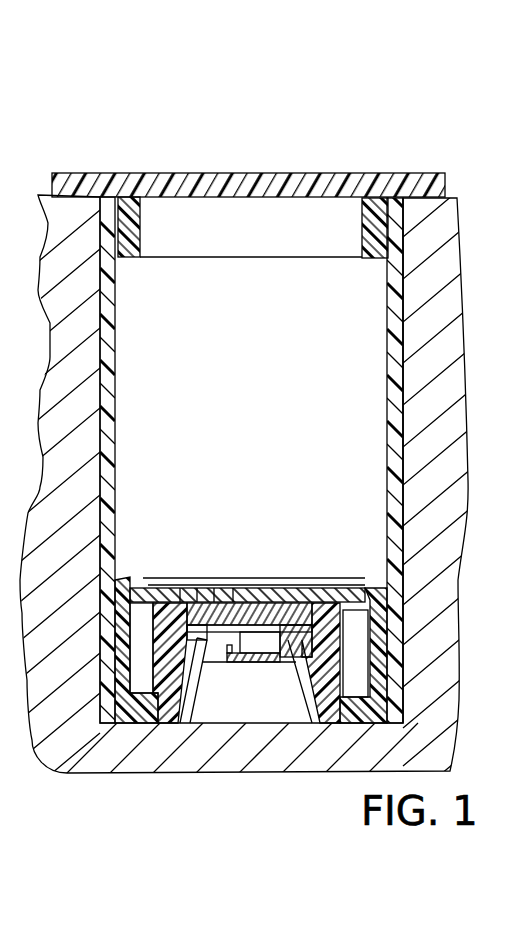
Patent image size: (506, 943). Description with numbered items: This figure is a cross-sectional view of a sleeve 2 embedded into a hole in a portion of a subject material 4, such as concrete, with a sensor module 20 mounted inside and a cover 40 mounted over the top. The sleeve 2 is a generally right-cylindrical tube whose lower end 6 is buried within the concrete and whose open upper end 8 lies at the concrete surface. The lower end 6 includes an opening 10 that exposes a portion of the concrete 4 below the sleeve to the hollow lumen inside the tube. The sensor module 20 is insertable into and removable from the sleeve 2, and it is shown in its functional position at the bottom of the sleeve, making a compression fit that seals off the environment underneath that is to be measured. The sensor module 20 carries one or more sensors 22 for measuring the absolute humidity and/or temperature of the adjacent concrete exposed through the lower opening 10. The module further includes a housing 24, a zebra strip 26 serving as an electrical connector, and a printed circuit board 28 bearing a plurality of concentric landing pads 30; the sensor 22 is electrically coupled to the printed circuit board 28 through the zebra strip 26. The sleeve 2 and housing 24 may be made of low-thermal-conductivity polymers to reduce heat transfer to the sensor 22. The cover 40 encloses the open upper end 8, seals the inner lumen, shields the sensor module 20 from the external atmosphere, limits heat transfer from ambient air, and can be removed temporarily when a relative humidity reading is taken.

The sleeve 2 is at (406, 334).
The subject material 4 is at (452, 386).
The lower end 6 is at (133, 713).
The open upper end 8 is at (117, 173).
The opening 10 is at (218, 707).
The sensor module 20 is at (256, 556).
The sensor 22 is at (258, 662).
The housing 24 is at (168, 705).
The zebra strip 26 is at (290, 595).
The printed circuit board 28 is at (151, 590).
The concentric landing pads 30 is at (233, 588).
The cover 40 is at (265, 173).